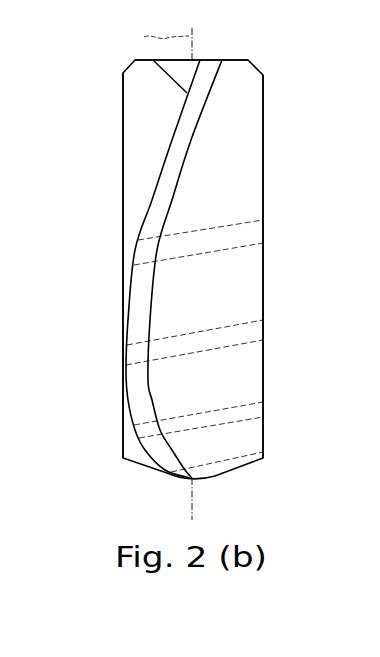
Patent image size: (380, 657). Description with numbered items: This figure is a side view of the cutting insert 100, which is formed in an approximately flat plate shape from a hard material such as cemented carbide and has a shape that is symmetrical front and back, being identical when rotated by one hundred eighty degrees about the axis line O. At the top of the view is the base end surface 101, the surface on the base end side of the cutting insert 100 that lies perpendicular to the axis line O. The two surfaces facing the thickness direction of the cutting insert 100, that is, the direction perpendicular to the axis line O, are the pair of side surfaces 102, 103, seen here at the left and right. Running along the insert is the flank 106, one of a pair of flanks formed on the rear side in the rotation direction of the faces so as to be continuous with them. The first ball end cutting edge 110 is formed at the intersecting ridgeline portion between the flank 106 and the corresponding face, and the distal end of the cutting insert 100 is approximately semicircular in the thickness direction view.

The cutting insert 100 is at (96, 93).
The base end surface 101 is at (211, 60).
The side surface 102 is at (122, 150).
The side surface 103 is at (264, 135).
The flank 106 is at (155, 217).
The first ball end cutting edge 110 is at (124, 294).